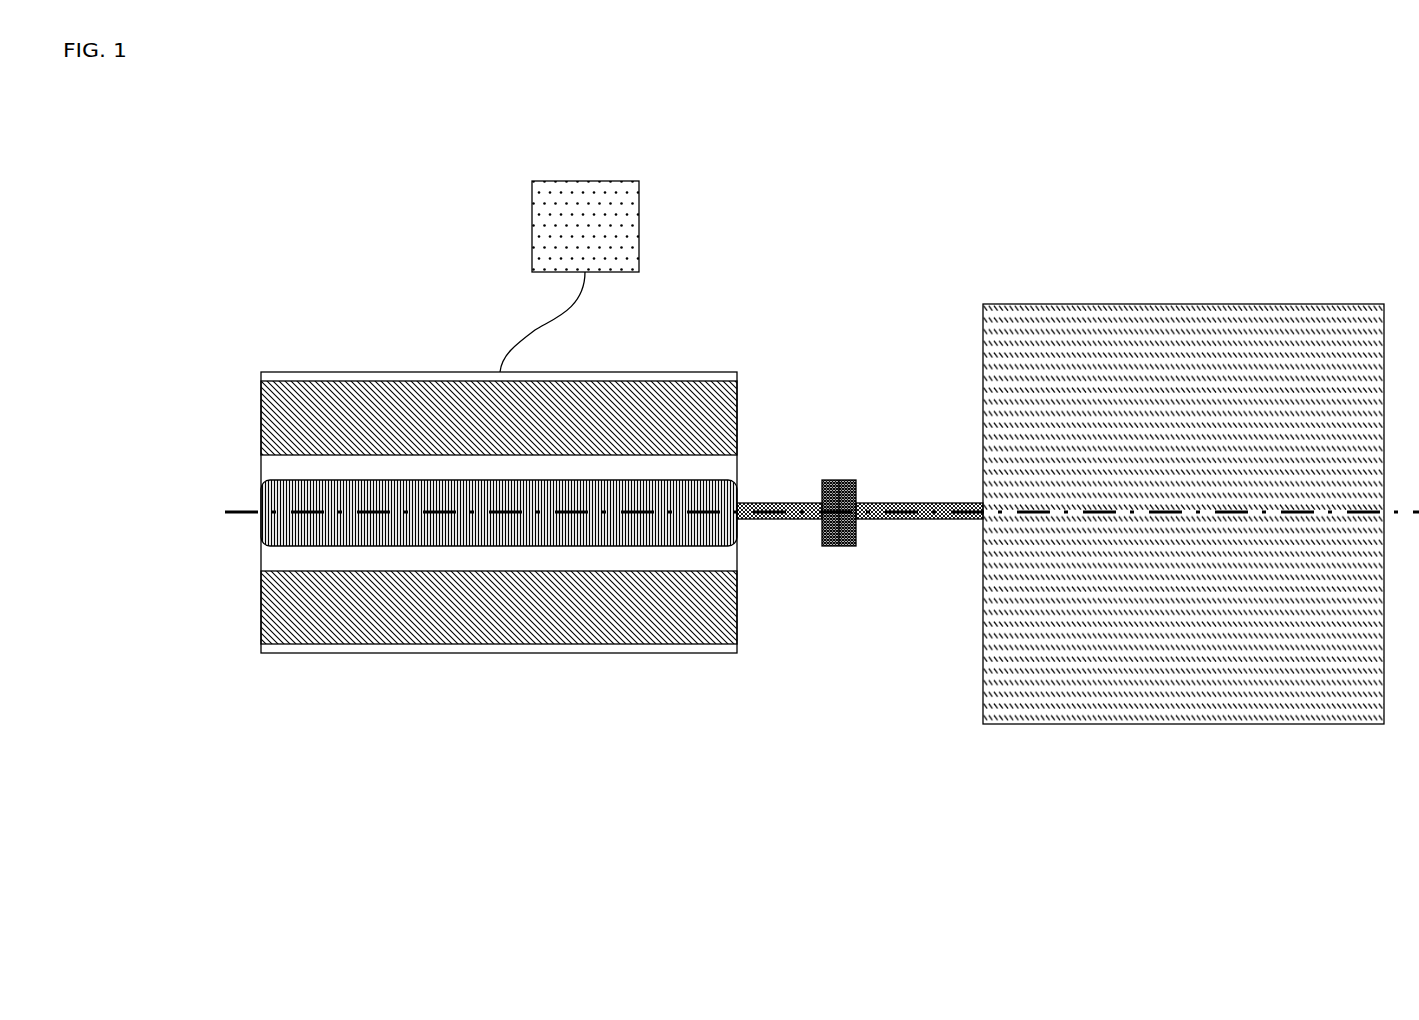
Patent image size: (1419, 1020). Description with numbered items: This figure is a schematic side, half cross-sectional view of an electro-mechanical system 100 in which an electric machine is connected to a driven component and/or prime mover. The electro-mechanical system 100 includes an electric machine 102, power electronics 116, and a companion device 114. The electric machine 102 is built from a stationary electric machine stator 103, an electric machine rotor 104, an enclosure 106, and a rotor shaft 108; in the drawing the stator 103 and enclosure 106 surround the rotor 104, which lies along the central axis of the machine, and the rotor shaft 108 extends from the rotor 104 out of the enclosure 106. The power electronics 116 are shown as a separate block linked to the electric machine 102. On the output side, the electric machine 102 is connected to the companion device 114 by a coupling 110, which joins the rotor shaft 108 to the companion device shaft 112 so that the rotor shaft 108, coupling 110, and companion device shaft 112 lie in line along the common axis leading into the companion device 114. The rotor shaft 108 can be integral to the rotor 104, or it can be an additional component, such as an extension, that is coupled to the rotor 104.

The electro-mechanical system 100 is at (849, 168).
The electric machine 102 is at (397, 288).
The electric machine stator 103 is at (259, 415).
The electric machine rotor 104 is at (259, 513).
The enclosure 106 is at (500, 655).
The rotor shaft 108 is at (776, 503).
The coupling 110 is at (833, 548).
The companion device shaft 112 is at (920, 503).
The companion device 114 is at (1181, 302).
The power electronics 116 is at (639, 225).